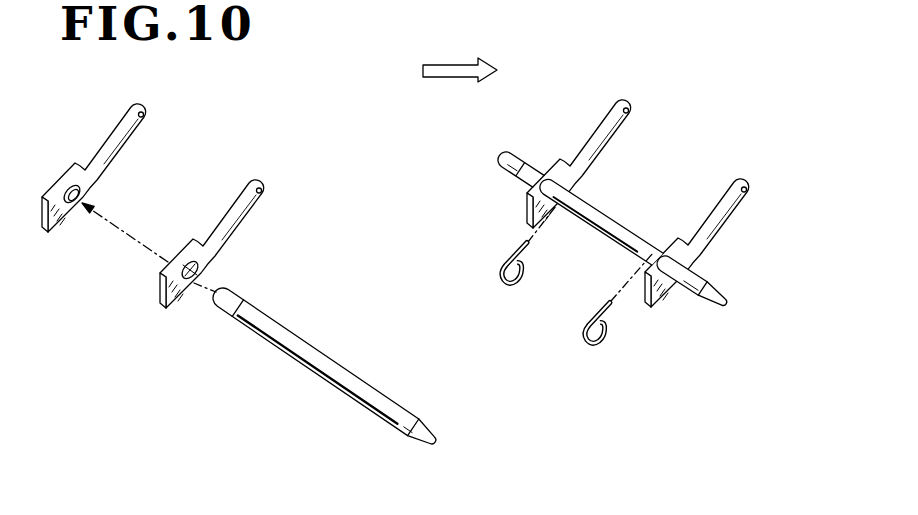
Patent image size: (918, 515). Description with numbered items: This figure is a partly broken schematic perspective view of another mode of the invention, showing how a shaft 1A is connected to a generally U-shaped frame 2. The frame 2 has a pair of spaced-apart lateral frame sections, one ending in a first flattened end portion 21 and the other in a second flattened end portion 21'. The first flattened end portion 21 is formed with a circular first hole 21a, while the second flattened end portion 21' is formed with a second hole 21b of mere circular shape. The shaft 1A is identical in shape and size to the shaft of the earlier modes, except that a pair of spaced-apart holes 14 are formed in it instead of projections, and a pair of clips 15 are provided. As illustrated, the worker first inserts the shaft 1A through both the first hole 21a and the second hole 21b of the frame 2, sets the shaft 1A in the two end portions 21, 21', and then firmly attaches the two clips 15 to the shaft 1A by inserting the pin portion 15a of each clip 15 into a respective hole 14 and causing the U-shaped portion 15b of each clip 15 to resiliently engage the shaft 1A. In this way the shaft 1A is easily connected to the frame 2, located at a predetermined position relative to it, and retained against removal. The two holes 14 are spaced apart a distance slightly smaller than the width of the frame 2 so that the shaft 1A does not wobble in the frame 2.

The frame 2 is at (110, 134).
The first flattened end portion 21 is at (292, 248).
The first hole 21a is at (85, 197).
The second hole 21b is at (191, 283).
The second flattened end portion 21' is at (407, 325).
The hole 14 is at (279, 335).
The shaft 1A is at (298, 361).
The clip 15 is at (540, 319).
The pin portion 15a is at (524, 243).
The U-shaped portion 15b is at (525, 279).